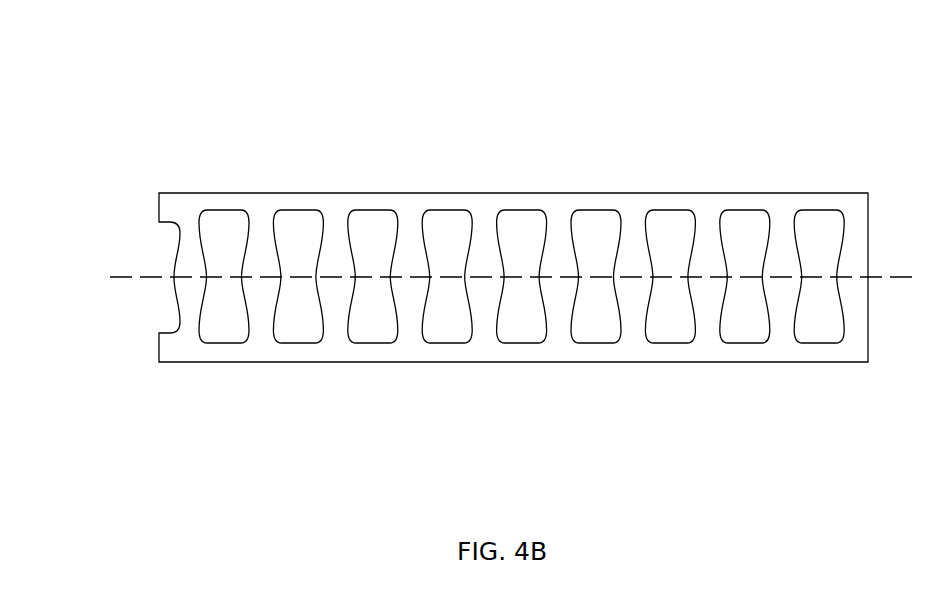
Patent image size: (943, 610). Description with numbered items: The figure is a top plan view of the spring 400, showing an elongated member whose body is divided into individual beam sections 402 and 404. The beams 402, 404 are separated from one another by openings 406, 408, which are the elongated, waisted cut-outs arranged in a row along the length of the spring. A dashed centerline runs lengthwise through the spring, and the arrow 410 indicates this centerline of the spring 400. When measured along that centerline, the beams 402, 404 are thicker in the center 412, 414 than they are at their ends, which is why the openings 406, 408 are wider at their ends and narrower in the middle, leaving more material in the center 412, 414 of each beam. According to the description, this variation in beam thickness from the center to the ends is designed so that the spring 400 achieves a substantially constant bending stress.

The spring 400 is at (697, 114).
The beam section 402 is at (262, 228).
The beam section 404 is at (333, 233).
The opening 406 is at (223, 338).
The opening 408 is at (297, 342).
The arrow 410 is at (126, 277).
The center 412 is at (270, 299).
The center 414 is at (347, 298).